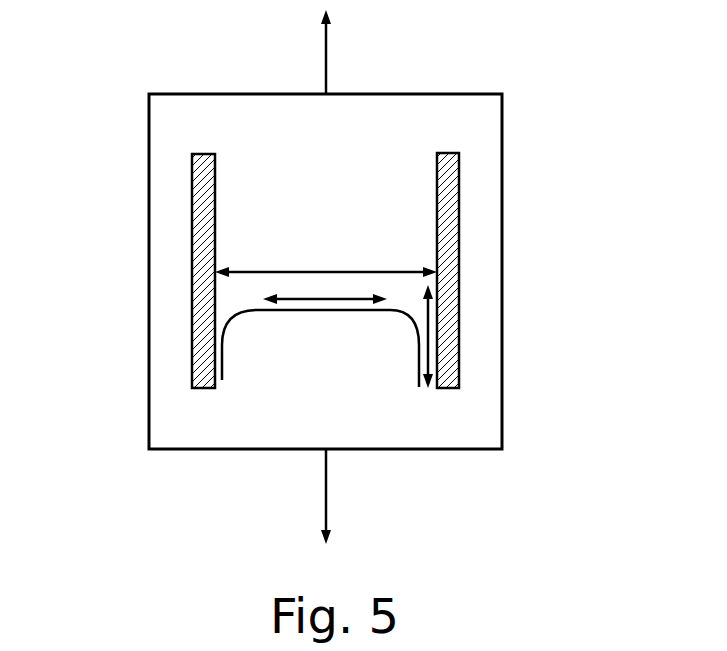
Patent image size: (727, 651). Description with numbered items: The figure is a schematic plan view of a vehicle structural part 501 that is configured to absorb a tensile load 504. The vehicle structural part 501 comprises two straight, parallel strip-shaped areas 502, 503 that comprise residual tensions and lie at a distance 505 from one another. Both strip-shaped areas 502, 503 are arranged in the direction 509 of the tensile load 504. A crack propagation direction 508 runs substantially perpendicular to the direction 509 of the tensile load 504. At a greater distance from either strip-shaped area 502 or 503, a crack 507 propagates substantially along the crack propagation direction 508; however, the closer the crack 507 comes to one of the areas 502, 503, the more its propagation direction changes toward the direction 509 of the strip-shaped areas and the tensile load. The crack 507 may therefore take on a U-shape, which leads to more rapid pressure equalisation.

The vehicle structural part 501 is at (400, 125).
The strip-shaped area 502 is at (190, 170).
The strip-shaped area 503 is at (460, 172).
The tensile load 504 is at (322, 66).
The distance 505 is at (396, 270).
The crack 507 is at (362, 310).
The crack propagation direction 508 is at (332, 310).
The direction of the tensile load 509 is at (438, 332).